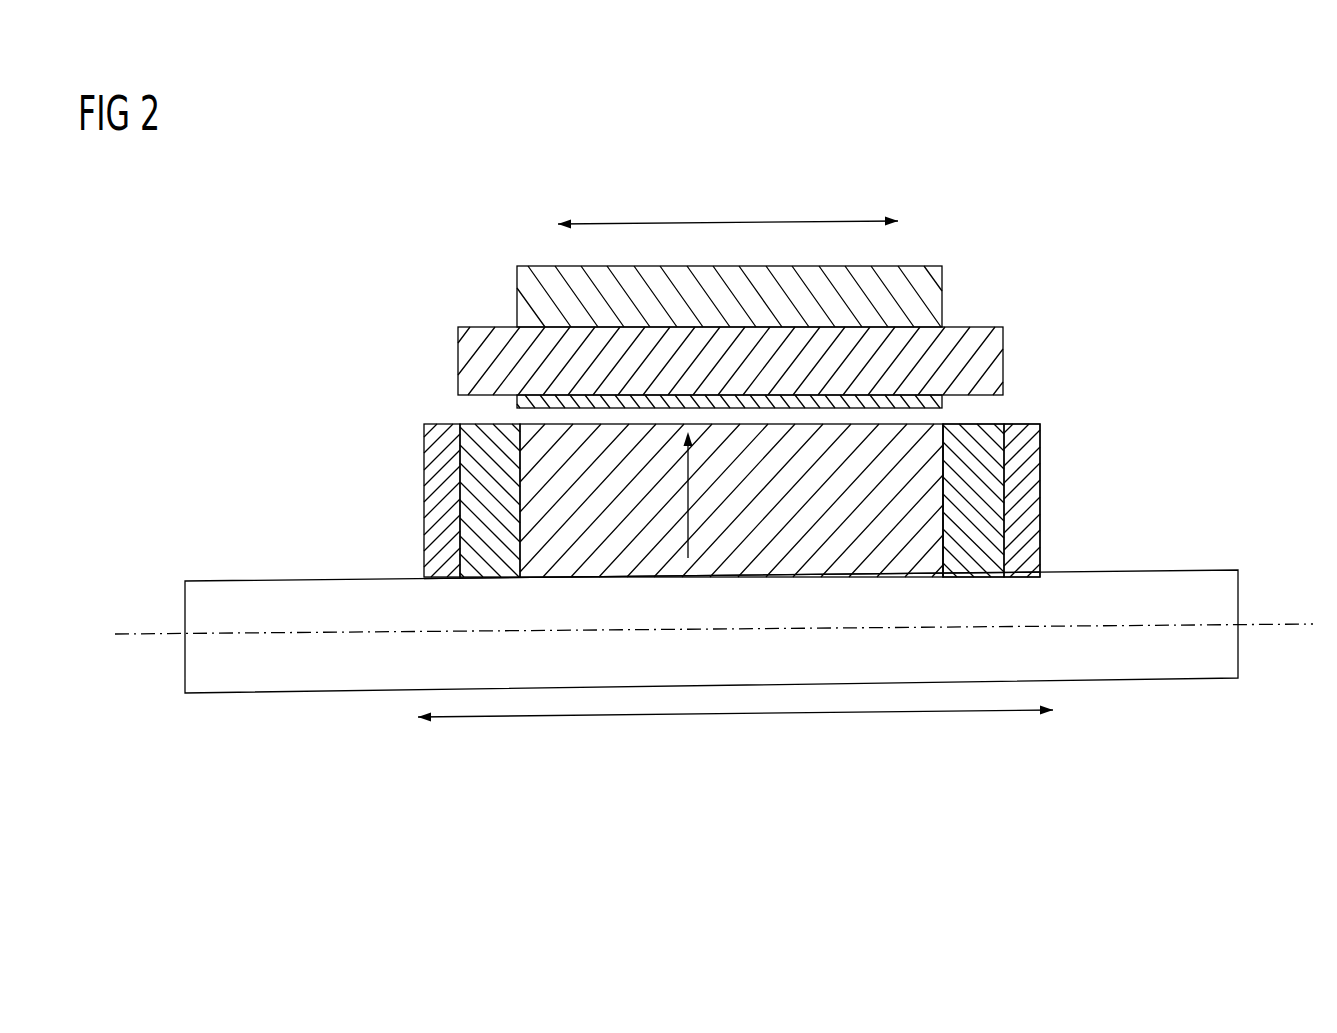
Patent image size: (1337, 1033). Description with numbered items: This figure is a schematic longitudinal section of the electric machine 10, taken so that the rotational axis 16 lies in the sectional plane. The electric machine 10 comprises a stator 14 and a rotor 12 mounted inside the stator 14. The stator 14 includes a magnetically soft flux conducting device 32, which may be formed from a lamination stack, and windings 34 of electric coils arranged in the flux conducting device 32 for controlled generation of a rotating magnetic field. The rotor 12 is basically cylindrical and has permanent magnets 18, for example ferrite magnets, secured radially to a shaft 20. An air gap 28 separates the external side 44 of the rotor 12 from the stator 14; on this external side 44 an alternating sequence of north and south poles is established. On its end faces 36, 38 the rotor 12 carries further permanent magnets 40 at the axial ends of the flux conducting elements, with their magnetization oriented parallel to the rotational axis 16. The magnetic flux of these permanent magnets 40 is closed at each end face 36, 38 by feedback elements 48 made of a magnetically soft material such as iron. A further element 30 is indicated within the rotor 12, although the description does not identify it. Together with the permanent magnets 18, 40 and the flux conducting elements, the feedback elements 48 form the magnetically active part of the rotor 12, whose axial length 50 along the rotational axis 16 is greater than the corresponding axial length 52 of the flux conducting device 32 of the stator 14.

The electric machine 10 is at (286, 302).
The rotor 12 is at (1120, 405).
The stator 14 is at (1030, 328).
The rotational axis 16 is at (1282, 625).
The permanent magnets 18 is at (848, 577).
The shaft 20 is at (1165, 580).
The air gap 28 is at (462, 416).
The central body 30 is at (690, 490).
The flux conducting device 32 is at (930, 295).
The windings 34 is at (1003, 360).
The end face 36 is at (1096, 500).
The end face 38 is at (712, 500).
The permanent magnets 40 is at (462, 548).
The external side 44 is at (930, 420).
The feedback elements 48 is at (437, 466).
The length of the magnetically active part of the rotor 50 is at (737, 714).
The length of the flux conducting device 52 is at (722, 221).